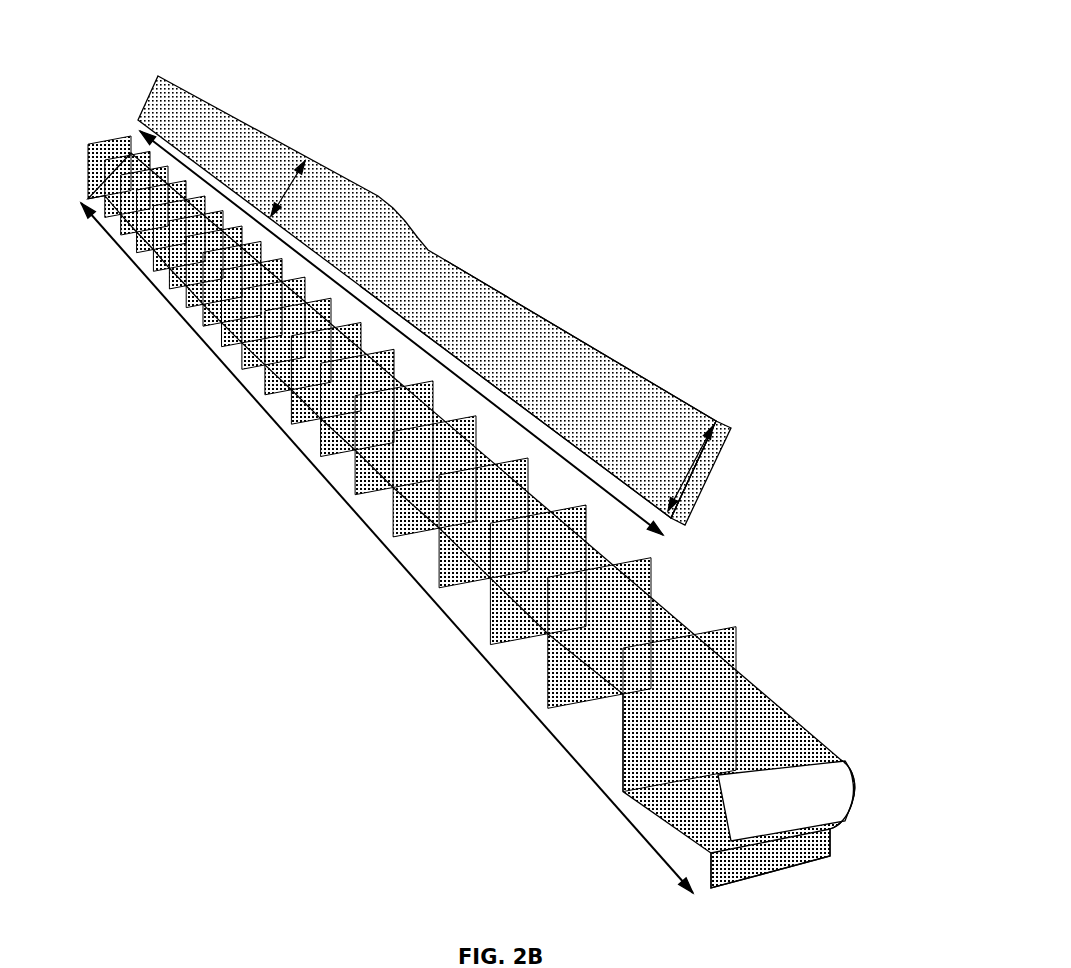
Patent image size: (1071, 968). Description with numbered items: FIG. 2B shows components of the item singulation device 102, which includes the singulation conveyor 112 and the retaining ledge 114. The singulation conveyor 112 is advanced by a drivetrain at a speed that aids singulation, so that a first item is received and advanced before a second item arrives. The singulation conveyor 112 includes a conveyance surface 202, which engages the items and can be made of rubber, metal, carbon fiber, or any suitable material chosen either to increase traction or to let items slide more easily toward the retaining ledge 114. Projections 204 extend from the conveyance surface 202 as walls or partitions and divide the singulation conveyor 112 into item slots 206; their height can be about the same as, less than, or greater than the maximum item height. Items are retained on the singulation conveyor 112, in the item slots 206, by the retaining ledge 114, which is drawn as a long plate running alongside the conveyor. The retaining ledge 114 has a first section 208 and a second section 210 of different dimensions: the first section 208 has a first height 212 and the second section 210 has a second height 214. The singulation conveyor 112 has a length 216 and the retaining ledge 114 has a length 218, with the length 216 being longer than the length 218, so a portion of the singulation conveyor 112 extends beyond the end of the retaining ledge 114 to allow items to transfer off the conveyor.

The item singulation device 102 is at (121, 65).
The conveyance surface 202 is at (745, 692).
The projections 204 is at (811, 838).
The item slots 206 is at (689, 598).
The first section 208 is at (235, 118).
The second section 210 is at (570, 332).
The first height 212 is at (280, 181).
The second height 214 is at (688, 458).
The length of the singulation conveyor 216 is at (345, 500).
The length of the retaining ledge 218 is at (662, 520).
The singulation conveyor 112 is at (868, 782).
The retaining ledge 114 is at (718, 428).